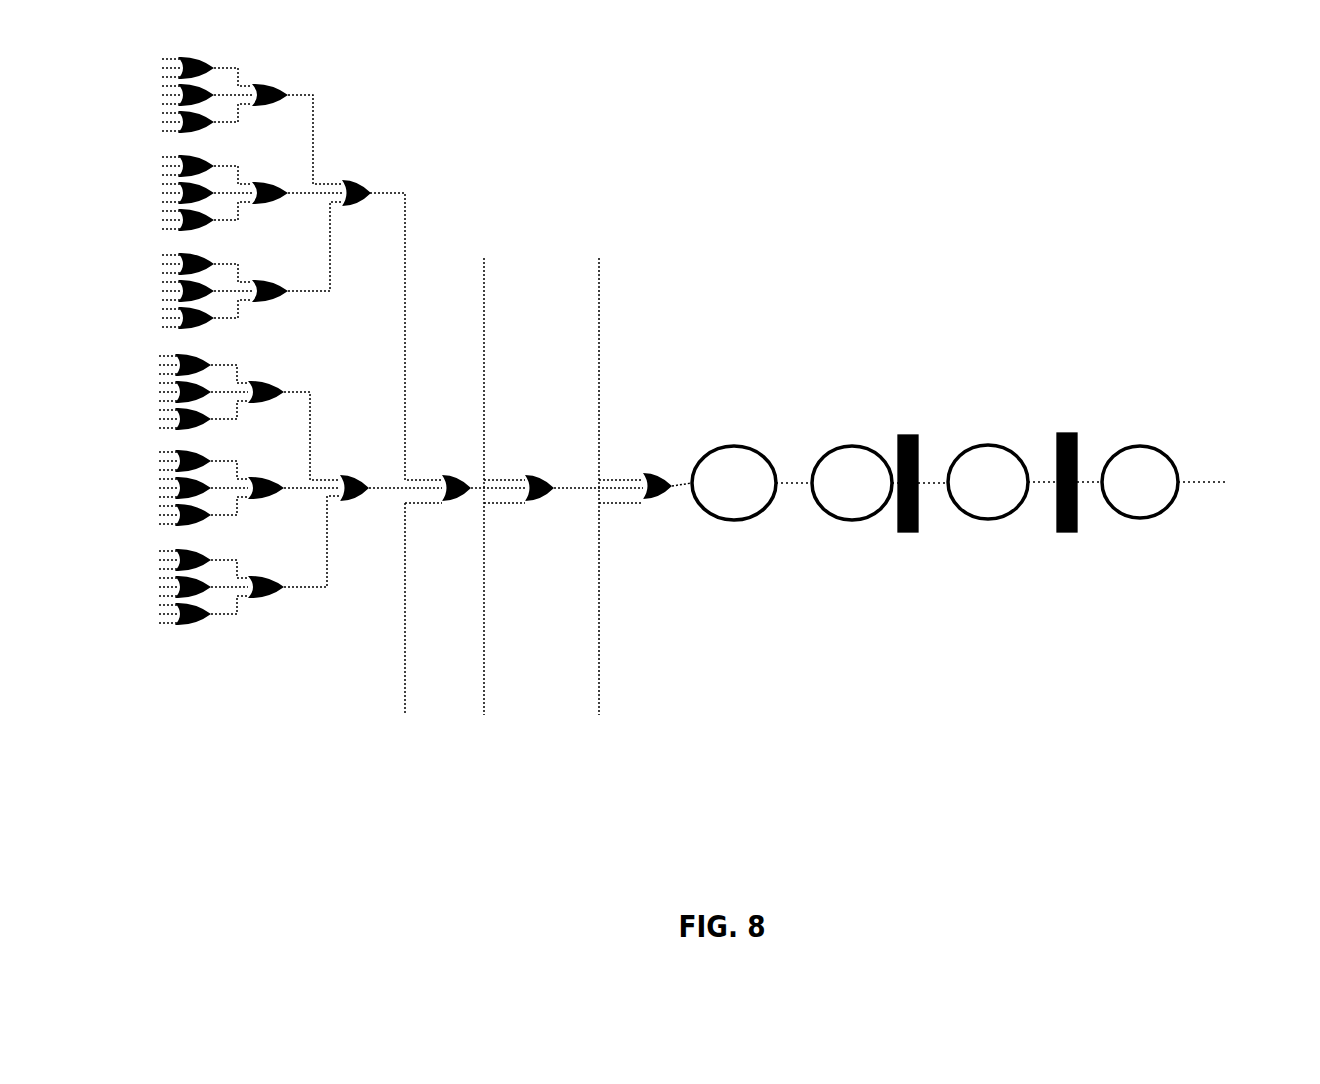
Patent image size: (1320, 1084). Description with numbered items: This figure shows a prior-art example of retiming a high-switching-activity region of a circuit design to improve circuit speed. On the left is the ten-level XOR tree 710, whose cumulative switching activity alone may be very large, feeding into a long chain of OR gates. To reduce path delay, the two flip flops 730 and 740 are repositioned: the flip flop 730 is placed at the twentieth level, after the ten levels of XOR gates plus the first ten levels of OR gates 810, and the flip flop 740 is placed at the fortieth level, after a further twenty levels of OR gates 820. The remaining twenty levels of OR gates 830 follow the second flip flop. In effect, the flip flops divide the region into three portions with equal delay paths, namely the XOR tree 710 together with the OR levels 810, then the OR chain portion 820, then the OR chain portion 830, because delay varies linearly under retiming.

The 10-level XOR tree 710 is at (625, 653).
The flip flop 730 is at (918, 436).
The flip flop 740 is at (1080, 446).
The first portion of the OR chain 810 is at (725, 530).
The second portion of the OR chain 820 is at (925, 522).
The third portion of the OR chain 830 is at (1102, 520).